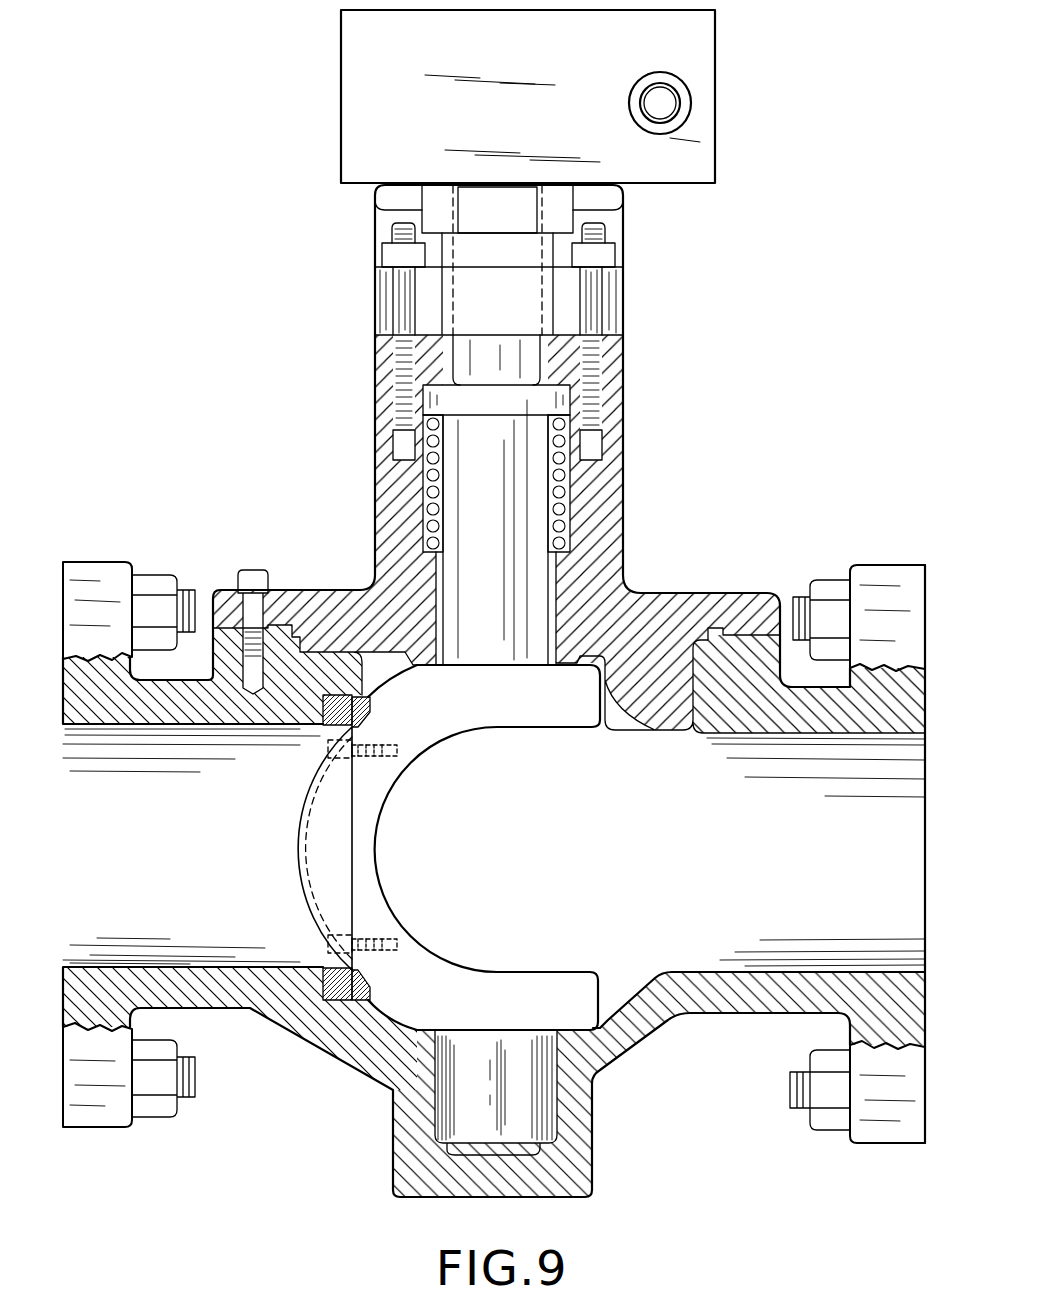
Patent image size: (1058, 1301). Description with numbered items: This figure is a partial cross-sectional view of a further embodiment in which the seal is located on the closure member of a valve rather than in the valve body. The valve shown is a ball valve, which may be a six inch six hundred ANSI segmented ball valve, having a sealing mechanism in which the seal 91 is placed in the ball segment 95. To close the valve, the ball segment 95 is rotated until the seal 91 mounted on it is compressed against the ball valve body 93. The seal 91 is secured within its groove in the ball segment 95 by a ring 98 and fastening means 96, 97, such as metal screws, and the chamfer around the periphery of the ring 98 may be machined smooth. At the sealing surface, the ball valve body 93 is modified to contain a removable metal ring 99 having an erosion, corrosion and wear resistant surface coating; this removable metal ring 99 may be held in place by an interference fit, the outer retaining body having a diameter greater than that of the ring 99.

The seal 91 is at (368, 712).
The ball valve body 93 is at (105, 585).
The ball segment 95 is at (580, 1012).
The fastening means 96 is at (403, 760).
The fastening means 97 is at (383, 938).
The ring 98 is at (333, 742).
The removable metal ring 99 is at (340, 695).